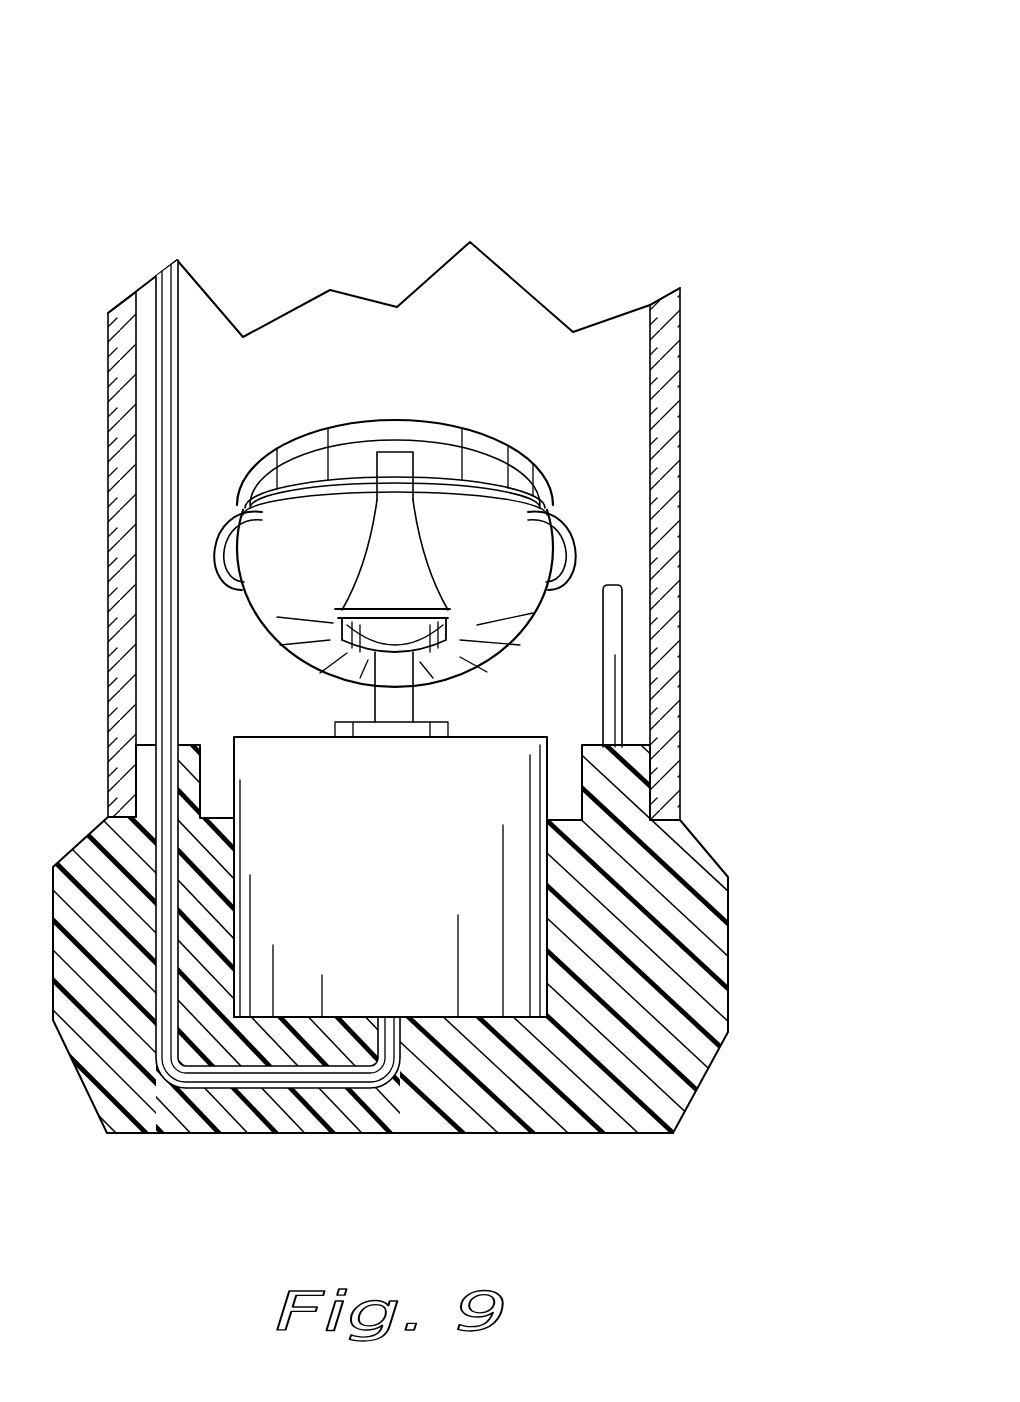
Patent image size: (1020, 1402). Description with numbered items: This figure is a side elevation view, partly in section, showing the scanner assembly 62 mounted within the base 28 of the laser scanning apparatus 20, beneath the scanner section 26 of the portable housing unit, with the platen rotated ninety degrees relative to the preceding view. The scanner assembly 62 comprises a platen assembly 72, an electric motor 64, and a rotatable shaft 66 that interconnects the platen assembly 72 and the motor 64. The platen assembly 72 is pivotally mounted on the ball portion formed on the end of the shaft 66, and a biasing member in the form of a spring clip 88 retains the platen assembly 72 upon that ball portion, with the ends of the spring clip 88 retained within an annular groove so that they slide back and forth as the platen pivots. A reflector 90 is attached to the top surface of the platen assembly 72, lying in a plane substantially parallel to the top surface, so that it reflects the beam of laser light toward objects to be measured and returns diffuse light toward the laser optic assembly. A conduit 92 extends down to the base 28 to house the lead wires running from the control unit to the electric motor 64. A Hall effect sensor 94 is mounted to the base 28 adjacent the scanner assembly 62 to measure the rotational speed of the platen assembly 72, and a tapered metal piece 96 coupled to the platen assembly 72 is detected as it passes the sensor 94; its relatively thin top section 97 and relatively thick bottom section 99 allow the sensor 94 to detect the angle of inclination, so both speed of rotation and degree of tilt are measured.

The laser scanning apparatus 20 is at (670, 135).
The scanner section 26 is at (752, 550).
The base 28 is at (677, 987).
The scanner assembly 62 is at (303, 350).
The electric motor 64 is at (345, 873).
The rotatable shaft 66 is at (393, 687).
The platen assembly 72 is at (478, 470).
The spring clip 88 is at (573, 545).
The reflector 90 is at (442, 432).
The conduit 92 is at (183, 320).
The Hall effect sensor 94 is at (613, 613).
The tapered metal piece 96 is at (487, 510).
The thin top section 97 is at (398, 478).
The thick bottom section 99 is at (388, 595).